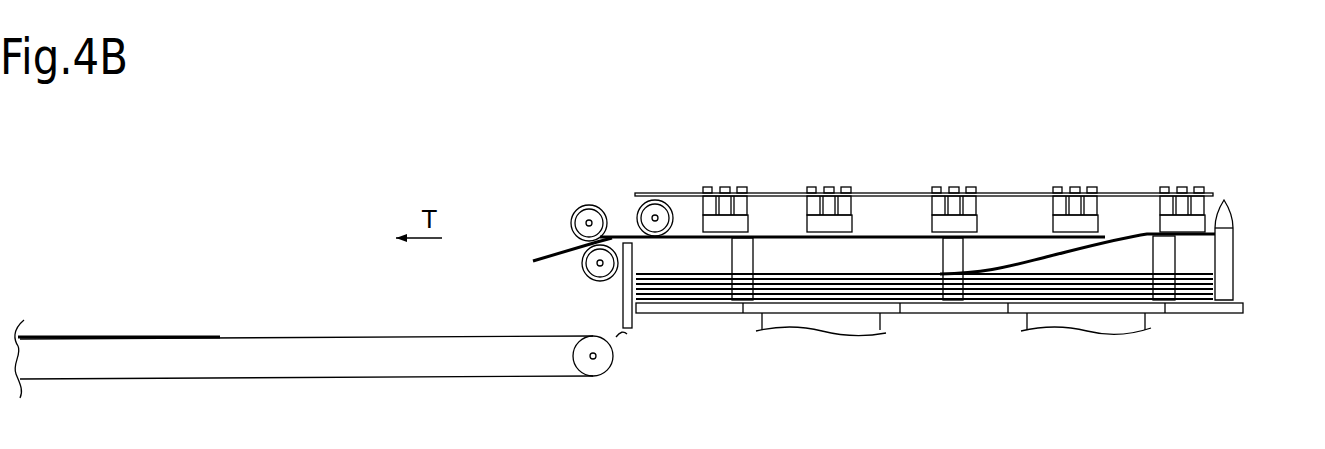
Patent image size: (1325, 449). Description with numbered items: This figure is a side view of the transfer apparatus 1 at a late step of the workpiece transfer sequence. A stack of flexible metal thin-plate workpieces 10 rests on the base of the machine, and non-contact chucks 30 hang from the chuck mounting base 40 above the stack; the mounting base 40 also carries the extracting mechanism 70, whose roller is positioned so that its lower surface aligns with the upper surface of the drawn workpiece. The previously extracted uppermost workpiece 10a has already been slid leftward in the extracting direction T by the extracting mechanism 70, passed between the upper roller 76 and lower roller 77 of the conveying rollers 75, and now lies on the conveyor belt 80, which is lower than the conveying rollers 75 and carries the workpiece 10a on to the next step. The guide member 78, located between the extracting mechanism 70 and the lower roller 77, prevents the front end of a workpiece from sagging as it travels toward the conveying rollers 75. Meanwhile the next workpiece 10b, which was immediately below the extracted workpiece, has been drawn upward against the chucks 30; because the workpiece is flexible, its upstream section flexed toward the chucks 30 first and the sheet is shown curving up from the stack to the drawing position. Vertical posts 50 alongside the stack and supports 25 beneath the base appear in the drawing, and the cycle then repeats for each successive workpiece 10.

The transfer apparatus 1 is at (1252, 150).
The workpiece 10 is at (148, 334).
The uppermost workpiece 10a is at (1005, 237).
The next workpiece 10b is at (1120, 237).
The support 25 is at (884, 316).
The non-contact chuck 30 is at (702, 220).
The chuck mounting base 40 is at (1213, 190).
The guide post 50 is at (731, 256).
The extracting mechanism 70 is at (637, 211).
The conveying rollers 75 is at (535, 252).
The upper roller 76 is at (562, 227).
The lower roller 77 is at (581, 271).
The guide member 78 is at (635, 330).
The conveyor belt 80 is at (437, 378).